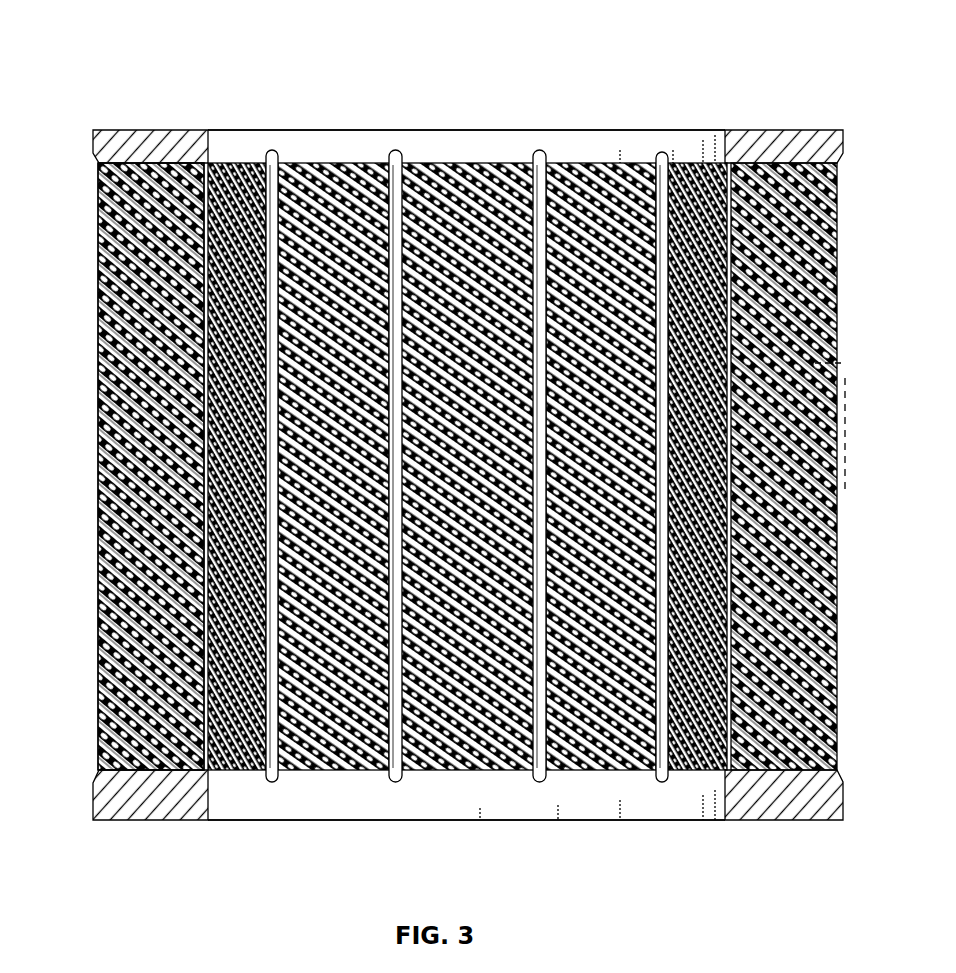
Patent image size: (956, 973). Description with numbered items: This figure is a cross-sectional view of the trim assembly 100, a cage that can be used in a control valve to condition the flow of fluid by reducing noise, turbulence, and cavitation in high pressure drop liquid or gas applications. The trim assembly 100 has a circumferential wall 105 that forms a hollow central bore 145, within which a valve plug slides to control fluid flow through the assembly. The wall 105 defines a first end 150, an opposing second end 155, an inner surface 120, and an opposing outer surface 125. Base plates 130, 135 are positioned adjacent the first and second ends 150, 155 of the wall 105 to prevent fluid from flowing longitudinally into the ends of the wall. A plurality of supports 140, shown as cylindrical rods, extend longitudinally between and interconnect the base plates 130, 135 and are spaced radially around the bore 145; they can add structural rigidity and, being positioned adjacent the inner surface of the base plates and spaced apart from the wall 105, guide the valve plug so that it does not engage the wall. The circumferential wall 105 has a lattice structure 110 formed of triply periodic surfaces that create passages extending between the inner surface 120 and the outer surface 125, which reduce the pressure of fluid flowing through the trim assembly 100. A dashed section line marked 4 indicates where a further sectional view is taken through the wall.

The trim assembly 100 is at (104, 40).
The circumferential wall 105 is at (98, 486).
The lattice structure 110 is at (100, 340).
The inner surface 120 is at (733, 173).
The outer surface 125 is at (838, 179).
The base plate 130 is at (500, 135).
The base plate 135 is at (400, 807).
The supports 140 is at (272, 150).
The hollow central bore 145 is at (325, 730).
The first end 150 is at (455, 160).
The second end 155 is at (592, 775).
The section line for FIG. 4 is at (845, 378).